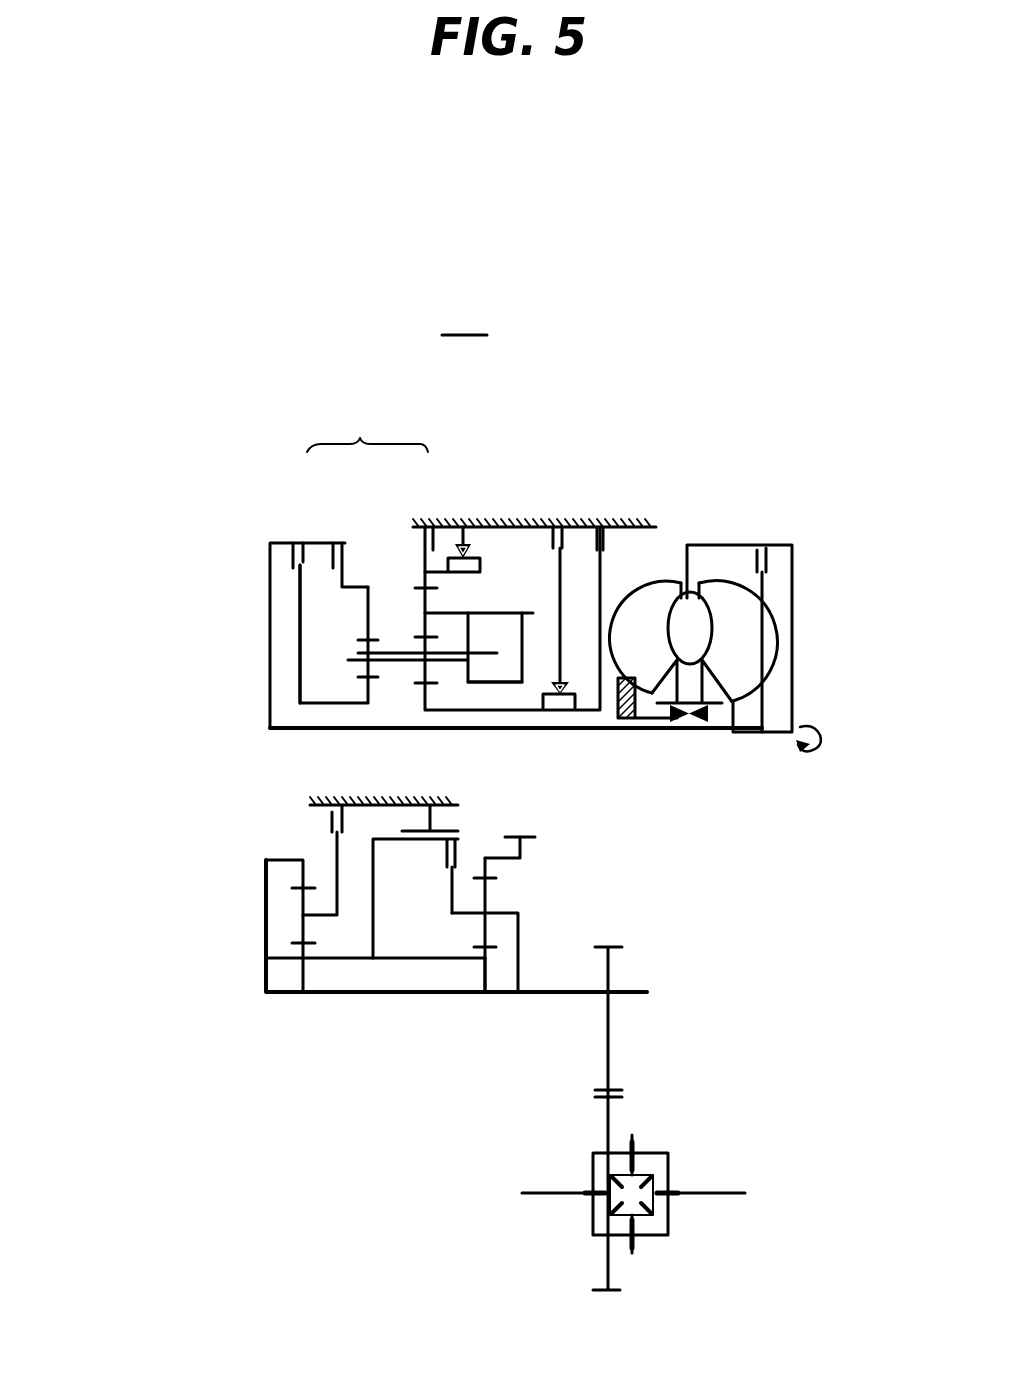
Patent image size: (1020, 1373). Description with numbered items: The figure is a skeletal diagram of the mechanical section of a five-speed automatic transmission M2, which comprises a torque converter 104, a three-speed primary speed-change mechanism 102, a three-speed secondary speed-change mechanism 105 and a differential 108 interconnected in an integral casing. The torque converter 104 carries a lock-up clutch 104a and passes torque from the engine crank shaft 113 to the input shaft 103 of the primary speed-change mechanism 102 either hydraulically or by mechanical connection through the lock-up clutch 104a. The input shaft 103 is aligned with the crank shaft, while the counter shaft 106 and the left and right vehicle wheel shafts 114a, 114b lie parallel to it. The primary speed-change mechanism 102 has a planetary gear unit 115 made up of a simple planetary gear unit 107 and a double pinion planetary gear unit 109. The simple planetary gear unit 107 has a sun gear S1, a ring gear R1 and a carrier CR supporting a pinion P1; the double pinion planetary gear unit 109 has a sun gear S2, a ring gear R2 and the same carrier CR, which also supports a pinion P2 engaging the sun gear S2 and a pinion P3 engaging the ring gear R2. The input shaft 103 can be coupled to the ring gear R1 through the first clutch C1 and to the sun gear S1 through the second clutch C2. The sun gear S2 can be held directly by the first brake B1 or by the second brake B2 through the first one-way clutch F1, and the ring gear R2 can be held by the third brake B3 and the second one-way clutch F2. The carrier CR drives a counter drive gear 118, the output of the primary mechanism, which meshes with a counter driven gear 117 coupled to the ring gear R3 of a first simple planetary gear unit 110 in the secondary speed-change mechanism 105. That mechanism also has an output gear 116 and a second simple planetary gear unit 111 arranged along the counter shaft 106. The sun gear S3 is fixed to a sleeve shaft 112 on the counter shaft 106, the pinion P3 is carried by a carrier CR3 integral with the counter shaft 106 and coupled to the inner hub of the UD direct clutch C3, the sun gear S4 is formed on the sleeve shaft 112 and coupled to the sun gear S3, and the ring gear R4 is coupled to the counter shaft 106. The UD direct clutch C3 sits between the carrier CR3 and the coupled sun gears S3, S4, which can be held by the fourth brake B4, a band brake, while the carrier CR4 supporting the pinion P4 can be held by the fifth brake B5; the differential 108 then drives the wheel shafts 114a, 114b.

The primary speed-change mechanism 102 is at (516, 536).
The input shaft 103 is at (622, 730).
The torque converter 104 is at (734, 639).
The lock-up clutch 104a is at (774, 553).
The secondary speed-change mechanism 105 is at (390, 922).
The counter shaft 106 is at (450, 993).
The simple planetary gear unit 107 is at (383, 611).
The differential 108 is at (644, 1180).
The double pinion planetary gear unit 109 is at (488, 609).
The first simple planetary gear unit 110 is at (520, 902).
The second simple planetary gear unit 111 is at (255, 878).
The sleeve shaft 112 is at (400, 962).
The engine crank shaft 113 is at (800, 745).
The left vehicle wheel shaft 114a is at (545, 1194).
The right vehicle wheel shaft 114b is at (722, 1195).
The planetary gear unit 115 is at (367, 429).
The output gear 116 is at (608, 970).
The counter driven gear 117 is at (524, 837).
The counter drive gear 118 is at (491, 616).
The five-speed automatic transmission M2 is at (480, 385).
The first clutch C1 is at (346, 548).
The second clutch C2 is at (296, 539).
The UD direct clutch C3 is at (415, 898).
The first brake B1 is at (603, 517).
The second brake B2 is at (559, 516).
The third brake B3 is at (424, 517).
The fourth brake B4 is at (430, 798).
The fifth brake B5 is at (336, 798).
The first one-way clutch F1 is at (568, 628).
The second one-way clutch F2 is at (456, 528).
The ring gear R1 is at (366, 608).
The ring gear R2 is at (432, 578).
The ring gear R3 is at (483, 863).
The ring gear R4 is at (265, 860).
The pinion P1 is at (360, 653).
The pinion P2 is at (425, 672).
The pinion P3 is at (423, 613).
The pinion P4 is at (312, 917).
The sun gear S1 is at (360, 683).
The sun gear S2 is at (433, 687).
The sun gear S3 is at (493, 958).
The sun gear S4 is at (302, 959).
The carrier CR is at (495, 613).
The carrier CR3 is at (523, 938).
The carrier CR4 is at (333, 858).